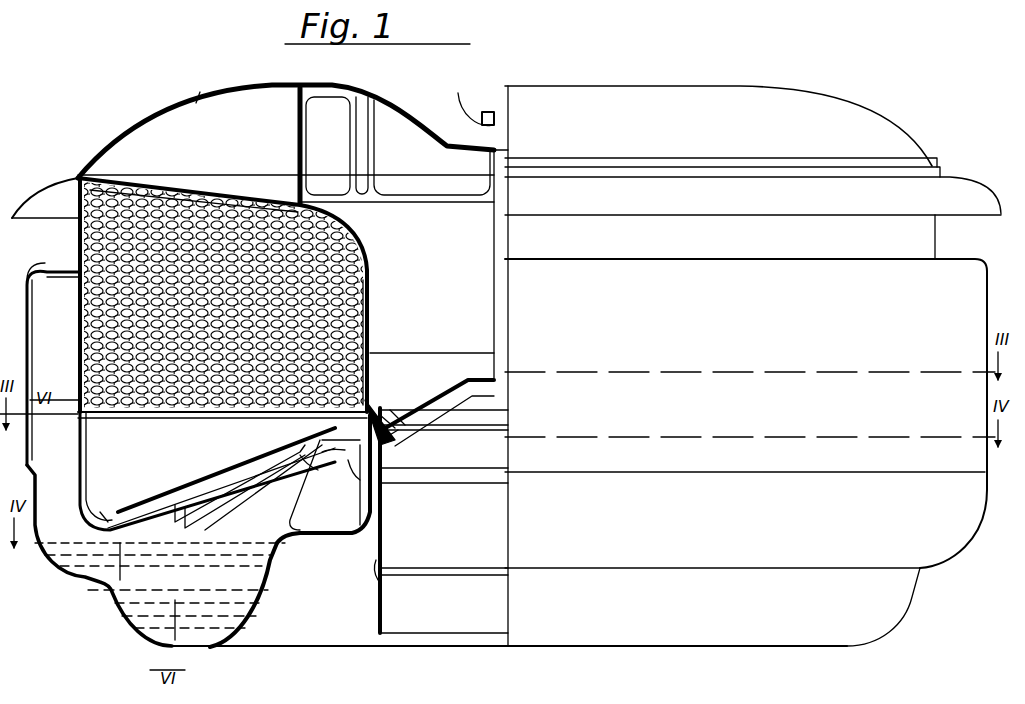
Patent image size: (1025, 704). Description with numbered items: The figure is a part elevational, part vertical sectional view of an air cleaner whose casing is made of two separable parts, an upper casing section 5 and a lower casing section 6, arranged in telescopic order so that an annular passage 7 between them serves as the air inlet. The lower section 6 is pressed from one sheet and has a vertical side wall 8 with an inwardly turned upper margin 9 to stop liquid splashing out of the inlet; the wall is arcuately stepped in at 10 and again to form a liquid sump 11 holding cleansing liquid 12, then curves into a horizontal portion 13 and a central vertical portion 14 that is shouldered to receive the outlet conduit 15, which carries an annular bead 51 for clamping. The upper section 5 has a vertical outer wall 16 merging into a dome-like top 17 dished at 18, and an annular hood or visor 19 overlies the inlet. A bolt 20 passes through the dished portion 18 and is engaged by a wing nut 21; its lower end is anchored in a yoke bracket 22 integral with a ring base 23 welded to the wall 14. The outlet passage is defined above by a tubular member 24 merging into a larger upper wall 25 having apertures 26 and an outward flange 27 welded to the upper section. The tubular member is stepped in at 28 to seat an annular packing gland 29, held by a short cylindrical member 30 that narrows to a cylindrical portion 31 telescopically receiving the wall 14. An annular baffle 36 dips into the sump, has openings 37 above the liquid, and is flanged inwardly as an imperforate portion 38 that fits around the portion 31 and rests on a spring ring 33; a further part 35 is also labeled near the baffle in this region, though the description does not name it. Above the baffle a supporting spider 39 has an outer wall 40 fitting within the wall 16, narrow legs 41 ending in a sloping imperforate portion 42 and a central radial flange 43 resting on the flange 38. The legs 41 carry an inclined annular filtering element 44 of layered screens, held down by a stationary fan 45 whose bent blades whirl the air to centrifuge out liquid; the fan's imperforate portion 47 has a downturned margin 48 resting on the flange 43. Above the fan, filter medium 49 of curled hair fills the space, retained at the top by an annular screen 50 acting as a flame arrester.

The upper casing section 5 is at (198, 102).
The lower casing section 6 is at (292, 632).
The annular passage 7 is at (40, 335).
The side wall 8 is at (14, 358).
The inwardly turned upper margin 9 is at (55, 264).
The arcuately stepped-in wall portion 10 is at (64, 572).
The liquid sump 11 is at (160, 660).
The cleansing liquid 12 is at (205, 630).
The horizontally extending wall portion 13 is at (330, 536).
The central vertical wall portion 14 is at (390, 478).
The outlet conduit 15 is at (382, 552).
The outer wall 16 is at (64, 297).
The dome-like top 17 is at (160, 117).
The centrally dished portion 18 is at (415, 122).
The annular hood or visor 19 is at (42, 186).
The bolt 20 is at (494, 272).
The wing nut 21 is at (492, 120).
The yoke bracket 22 is at (455, 398).
The ring base 23 is at (444, 452).
The tubular member 24 is at (364, 285).
The upper wall portion 25 is at (358, 128).
The apertures 26 is at (370, 158).
The flange 27 is at (298, 108).
The inwardly stepped portion 28 is at (401, 395).
The annular packing gland 29 is at (382, 420).
The cylindrical member 30 is at (372, 372).
The cylindrical portion 31 is at (329, 485).
The spring ring 33 is at (336, 459).
The tube 35 is at (349, 474).
The annular baffle 36 is at (270, 560).
The openings 37 is at (284, 540).
The imperforate portion 38 is at (311, 470).
The supporting spider 39 is at (96, 518).
The outer vertical wall 40 is at (82, 490).
The legs 41 is at (232, 488).
The sloping imperforate portion 42 is at (290, 462).
The central radial flange 43 is at (384, 396).
The annular filtering element 44 is at (190, 478).
The stationary fan 45 is at (100, 440).
The imperforate fan portion 47 is at (368, 322).
The downwardly turned inner margin 48 is at (384, 446).
The filter medium 49 is at (150, 205).
The annular screen 50 is at (225, 200).
The annular bead 51 is at (440, 575).